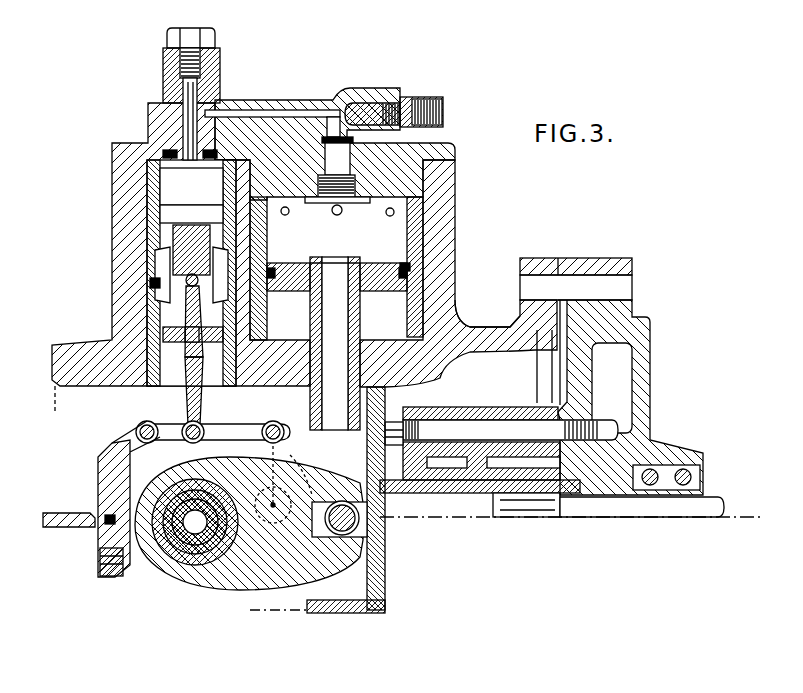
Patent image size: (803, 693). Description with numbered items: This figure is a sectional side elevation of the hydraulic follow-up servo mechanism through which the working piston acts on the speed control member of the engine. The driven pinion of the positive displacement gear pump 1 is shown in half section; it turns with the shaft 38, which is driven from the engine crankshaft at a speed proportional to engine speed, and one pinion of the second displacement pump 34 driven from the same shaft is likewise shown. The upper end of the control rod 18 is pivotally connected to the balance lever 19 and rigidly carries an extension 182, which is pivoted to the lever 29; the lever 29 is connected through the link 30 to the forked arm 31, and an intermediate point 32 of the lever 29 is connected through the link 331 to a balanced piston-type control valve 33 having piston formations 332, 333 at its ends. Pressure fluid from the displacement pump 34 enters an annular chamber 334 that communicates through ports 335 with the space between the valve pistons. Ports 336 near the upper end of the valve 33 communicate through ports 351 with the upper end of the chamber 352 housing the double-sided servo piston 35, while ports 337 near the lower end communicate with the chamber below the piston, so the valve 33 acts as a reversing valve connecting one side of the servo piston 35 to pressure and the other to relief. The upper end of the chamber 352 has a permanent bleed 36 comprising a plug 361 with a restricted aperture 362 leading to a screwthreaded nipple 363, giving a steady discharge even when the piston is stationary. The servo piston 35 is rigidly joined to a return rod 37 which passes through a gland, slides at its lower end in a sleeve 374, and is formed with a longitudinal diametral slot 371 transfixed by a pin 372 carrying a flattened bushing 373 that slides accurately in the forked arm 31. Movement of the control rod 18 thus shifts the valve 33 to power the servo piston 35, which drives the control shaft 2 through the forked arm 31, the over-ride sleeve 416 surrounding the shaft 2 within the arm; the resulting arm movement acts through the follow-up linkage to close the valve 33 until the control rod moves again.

The positive displacement gear pump 1 is at (447, 465).
The control shaft 2 is at (174, 547).
The control rod 18 is at (103, 573).
The balance lever 19 is at (57, 513).
The lever 29 is at (232, 431).
The link 30 is at (278, 450).
The forked arm 31 is at (245, 574).
The intermediate point 32 is at (200, 432).
The control valve 33 is at (176, 258).
The displacement pump 34 is at (587, 420).
The servo piston 35 is at (424, 262).
The permanent bleed 36 is at (363, 204).
The return rod 37 is at (415, 310).
The shaft 38 is at (668, 508).
The extension 182 is at (130, 448).
The link 331 is at (186, 397).
The piston formation 332 is at (163, 340).
The piston formation 333 is at (223, 218).
The annular chamber 334 is at (150, 284).
The ports 335 is at (150, 272).
The ports 336 is at (222, 210).
The ports 337 is at (160, 334).
The ports 351 is at (288, 214).
The chamber 352 is at (422, 232).
The plug 361 is at (333, 117).
The restricted aperture 362 is at (335, 137).
The screwthreaded nipple 363 is at (433, 97).
The longitudinal diametral slot 371 is at (356, 580).
The pin 372 is at (350, 527).
The flattened bushing 373 is at (346, 540).
The sleeve 374 is at (380, 603).
The over-ride sleeve 416 is at (188, 580).